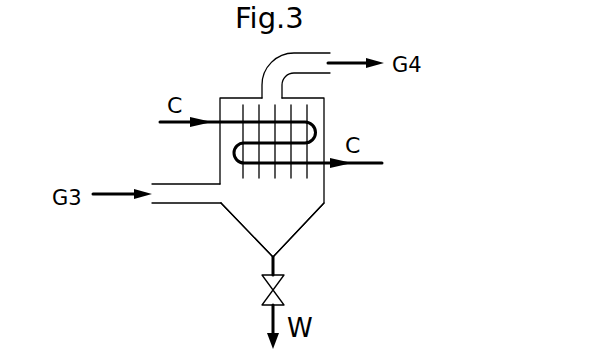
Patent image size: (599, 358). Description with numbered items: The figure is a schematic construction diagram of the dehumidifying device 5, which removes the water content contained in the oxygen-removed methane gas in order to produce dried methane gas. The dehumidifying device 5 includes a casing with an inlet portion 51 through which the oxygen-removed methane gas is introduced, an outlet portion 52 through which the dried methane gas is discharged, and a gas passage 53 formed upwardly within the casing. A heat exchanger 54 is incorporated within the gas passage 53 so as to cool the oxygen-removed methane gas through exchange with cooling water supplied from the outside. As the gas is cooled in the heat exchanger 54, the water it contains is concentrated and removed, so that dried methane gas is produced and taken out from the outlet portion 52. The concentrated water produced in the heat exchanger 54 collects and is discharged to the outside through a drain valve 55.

The dehumidifying device 5 is at (173, 83).
The inlet portion 51 is at (180, 206).
The outlet portion 52 is at (268, 73).
The gas passage 53 is at (272, 207).
The heat exchanger 54 is at (232, 149).
The drain valve 55 is at (262, 280).